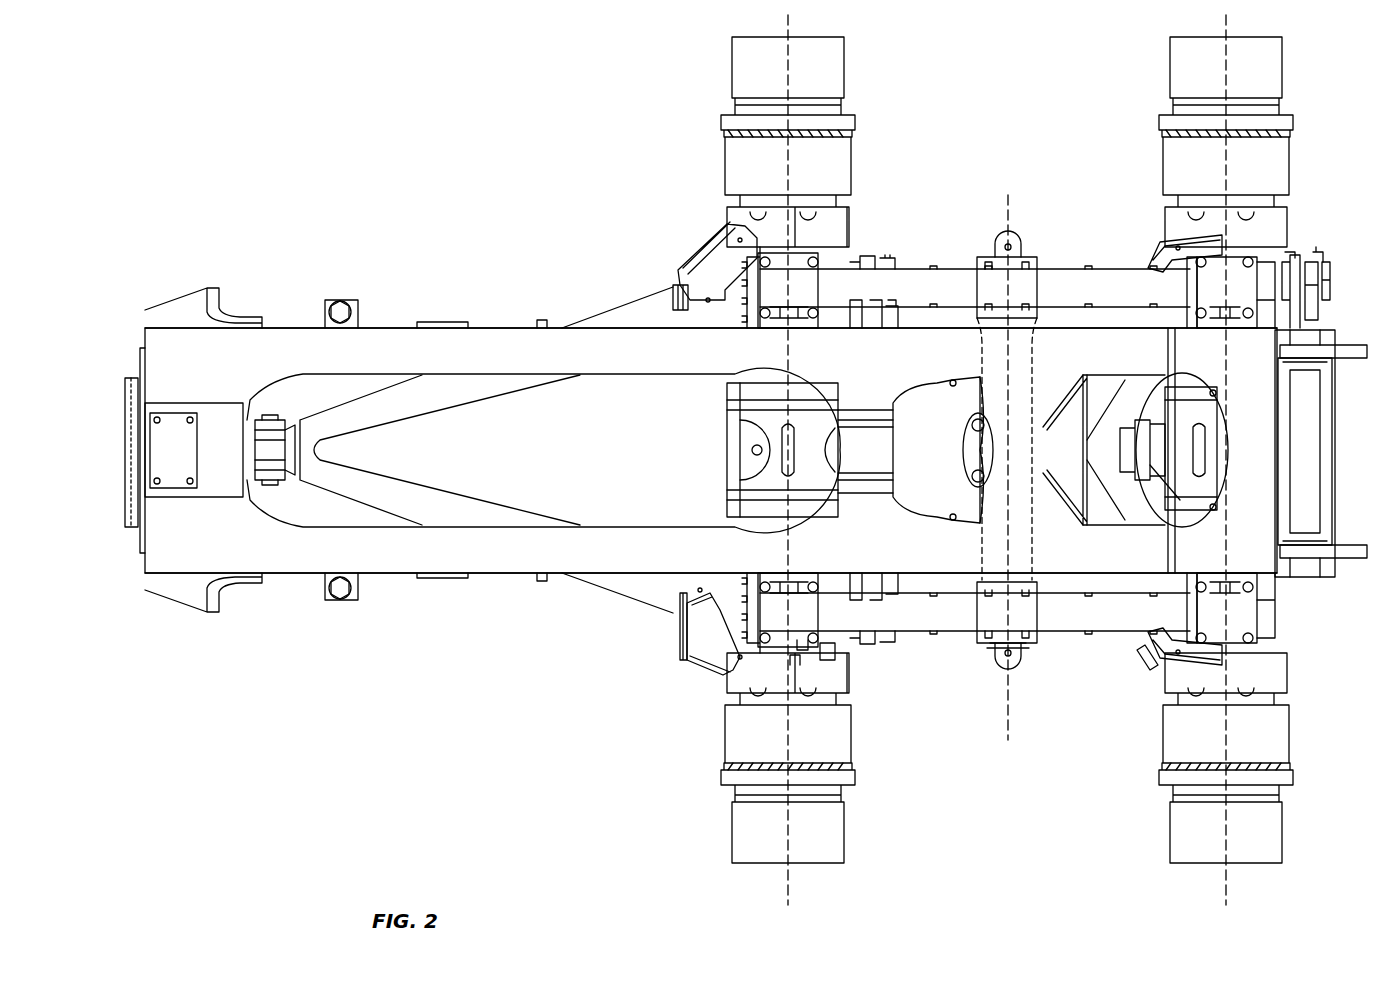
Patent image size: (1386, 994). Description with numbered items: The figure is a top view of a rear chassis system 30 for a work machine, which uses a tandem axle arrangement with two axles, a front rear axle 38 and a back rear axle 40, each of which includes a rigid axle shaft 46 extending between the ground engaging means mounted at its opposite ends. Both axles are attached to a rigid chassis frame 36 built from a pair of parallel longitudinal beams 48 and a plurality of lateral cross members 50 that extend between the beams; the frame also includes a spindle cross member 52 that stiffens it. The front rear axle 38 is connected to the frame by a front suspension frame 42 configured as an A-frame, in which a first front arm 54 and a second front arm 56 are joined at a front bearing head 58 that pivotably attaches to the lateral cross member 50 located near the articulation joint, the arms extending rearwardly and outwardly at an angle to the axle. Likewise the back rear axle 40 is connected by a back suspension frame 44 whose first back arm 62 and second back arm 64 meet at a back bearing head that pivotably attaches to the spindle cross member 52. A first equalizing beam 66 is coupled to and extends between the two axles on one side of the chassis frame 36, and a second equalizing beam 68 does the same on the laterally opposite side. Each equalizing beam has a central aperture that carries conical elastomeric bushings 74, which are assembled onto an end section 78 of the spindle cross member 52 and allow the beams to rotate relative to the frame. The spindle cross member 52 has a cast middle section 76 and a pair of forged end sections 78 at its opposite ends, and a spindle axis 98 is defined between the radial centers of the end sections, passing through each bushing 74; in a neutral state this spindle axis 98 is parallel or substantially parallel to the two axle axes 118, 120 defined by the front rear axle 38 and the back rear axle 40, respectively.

The rear chassis system 30 is at (528, 185).
The chassis frame 36 is at (162, 342).
The front rear axle 38 is at (862, 155).
The back rear axle 40 is at (1297, 763).
The front suspension frame 42 is at (480, 395).
The back suspension frame 44 is at (1048, 445).
The rigid axle shaft 46 is at (1282, 248).
The longitudinal beams 48 is at (492, 340).
The lateral cross members 50 is at (175, 497).
The spindle cross member 52 is at (963, 432).
The first front arm 54 is at (618, 305).
The second front arm 56 is at (628, 600).
The front bearing head 58 is at (270, 420).
The first back arm 62 is at (1140, 300).
The second back arm 64 is at (1122, 605).
The first equalizing beam 66 is at (936, 280).
The second equalizing beam 68 is at (917, 620).
The bushing 74 is at (1012, 255).
The middle section 76 is at (988, 505).
The end section 78 is at (977, 607).
The spindle axis 98 is at (1010, 736).
The axle axis 118 is at (795, 890).
The axle axis 120 is at (1230, 890).